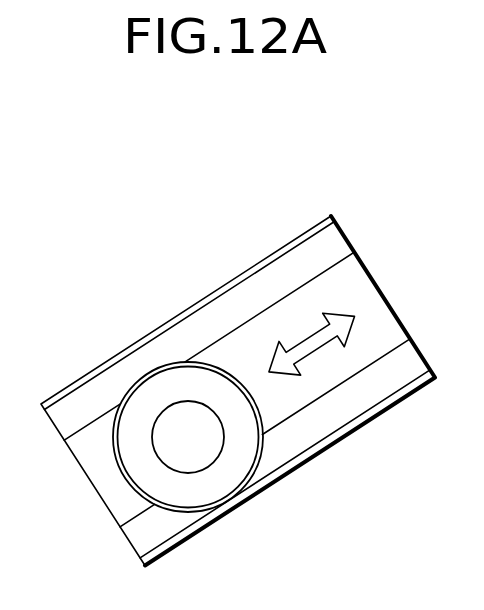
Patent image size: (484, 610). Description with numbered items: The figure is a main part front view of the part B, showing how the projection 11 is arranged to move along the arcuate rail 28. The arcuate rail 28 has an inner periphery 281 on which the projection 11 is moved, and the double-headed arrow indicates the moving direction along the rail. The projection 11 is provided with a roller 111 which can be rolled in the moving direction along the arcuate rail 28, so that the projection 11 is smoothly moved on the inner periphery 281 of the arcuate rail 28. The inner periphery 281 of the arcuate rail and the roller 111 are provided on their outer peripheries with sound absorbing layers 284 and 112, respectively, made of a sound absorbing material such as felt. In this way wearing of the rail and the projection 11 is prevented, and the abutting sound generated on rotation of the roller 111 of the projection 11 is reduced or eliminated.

The arcuate rail 28 is at (366, 429).
The sound absorbing layer 284 is at (257, 268).
The inner periphery of the rail 281 is at (340, 256).
The sound absorbing layer 112 is at (147, 374).
The projection 11 is at (120, 480).
The roller 111 is at (218, 485).
The part B is at (185, 287).